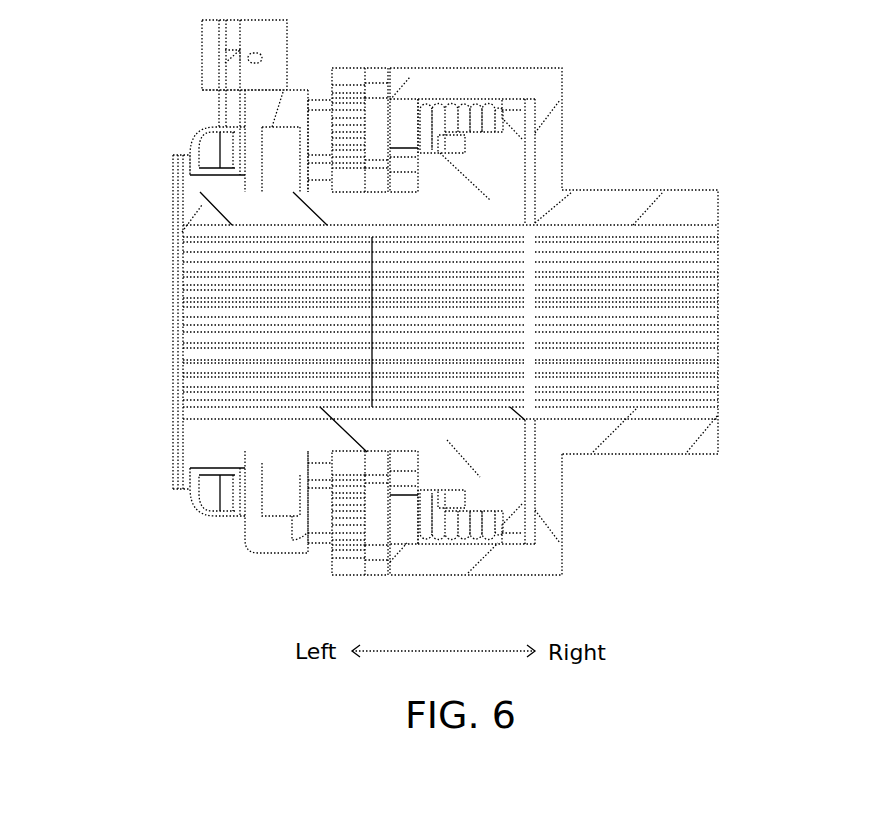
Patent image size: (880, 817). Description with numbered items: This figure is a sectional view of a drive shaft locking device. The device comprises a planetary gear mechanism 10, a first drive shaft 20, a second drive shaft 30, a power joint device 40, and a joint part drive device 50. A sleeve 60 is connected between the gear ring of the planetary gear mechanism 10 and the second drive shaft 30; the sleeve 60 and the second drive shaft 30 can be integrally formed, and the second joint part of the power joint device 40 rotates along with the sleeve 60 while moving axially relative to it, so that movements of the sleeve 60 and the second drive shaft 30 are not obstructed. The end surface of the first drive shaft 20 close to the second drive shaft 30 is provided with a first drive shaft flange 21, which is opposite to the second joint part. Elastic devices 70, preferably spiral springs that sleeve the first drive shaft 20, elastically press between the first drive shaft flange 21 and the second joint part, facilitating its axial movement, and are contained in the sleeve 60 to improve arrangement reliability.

The planetary gear mechanism 10 is at (350, 66).
The first drive shaft 20 is at (176, 243).
The first drive shaft flange 21 is at (513, 117).
The second drive shaft 30 is at (697, 203).
The power joint device 40 is at (405, 117).
The joint part drive device 50 is at (233, 110).
The sleeve 60 is at (508, 80).
The elastic devices 70 is at (468, 110).